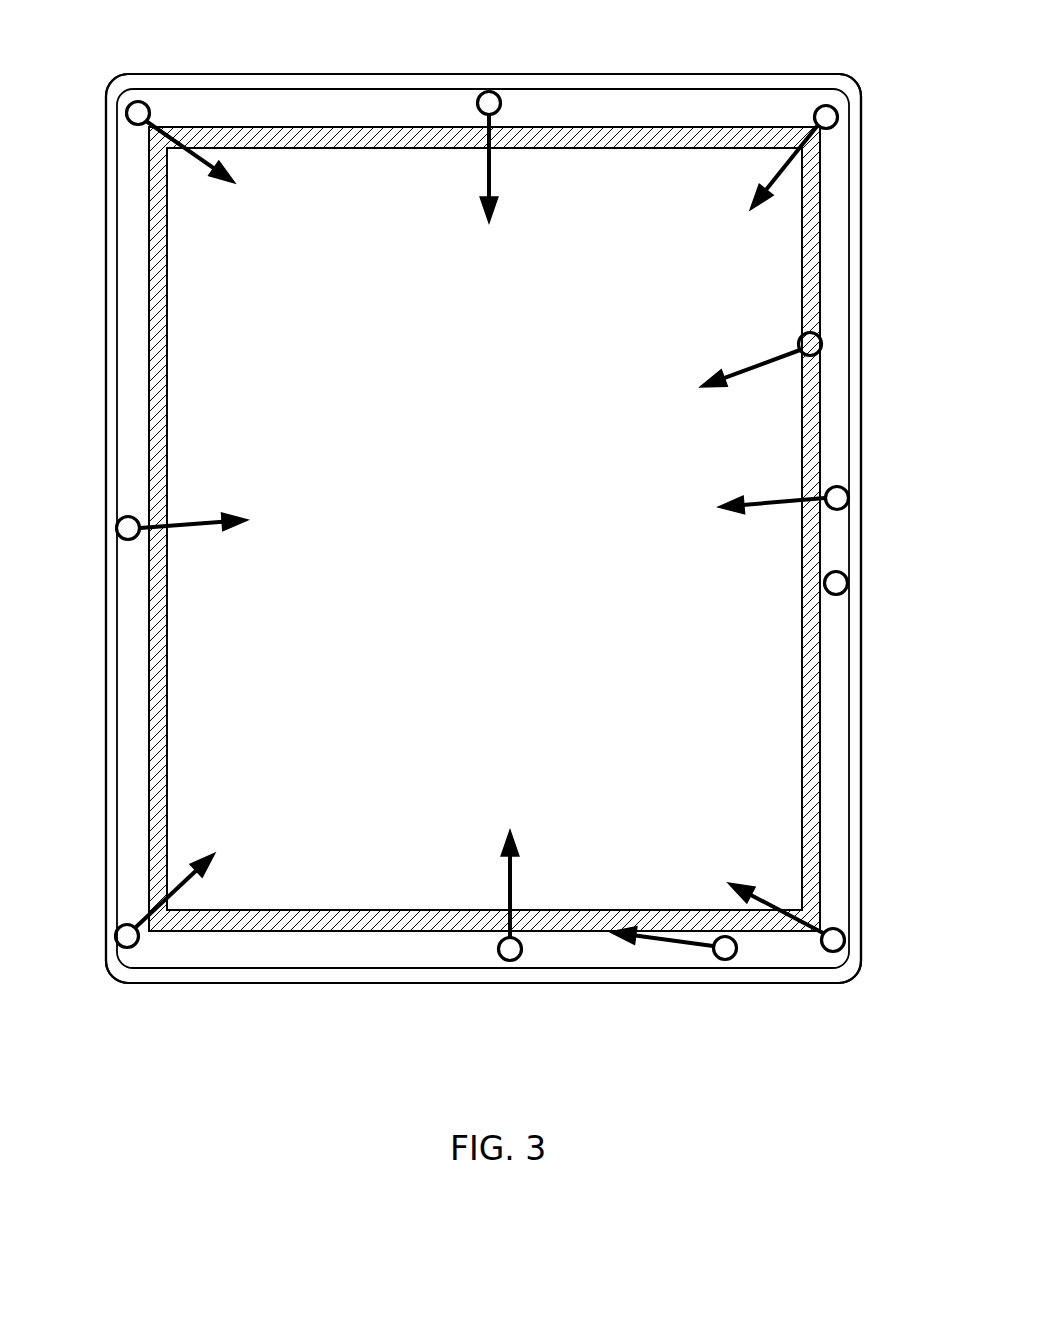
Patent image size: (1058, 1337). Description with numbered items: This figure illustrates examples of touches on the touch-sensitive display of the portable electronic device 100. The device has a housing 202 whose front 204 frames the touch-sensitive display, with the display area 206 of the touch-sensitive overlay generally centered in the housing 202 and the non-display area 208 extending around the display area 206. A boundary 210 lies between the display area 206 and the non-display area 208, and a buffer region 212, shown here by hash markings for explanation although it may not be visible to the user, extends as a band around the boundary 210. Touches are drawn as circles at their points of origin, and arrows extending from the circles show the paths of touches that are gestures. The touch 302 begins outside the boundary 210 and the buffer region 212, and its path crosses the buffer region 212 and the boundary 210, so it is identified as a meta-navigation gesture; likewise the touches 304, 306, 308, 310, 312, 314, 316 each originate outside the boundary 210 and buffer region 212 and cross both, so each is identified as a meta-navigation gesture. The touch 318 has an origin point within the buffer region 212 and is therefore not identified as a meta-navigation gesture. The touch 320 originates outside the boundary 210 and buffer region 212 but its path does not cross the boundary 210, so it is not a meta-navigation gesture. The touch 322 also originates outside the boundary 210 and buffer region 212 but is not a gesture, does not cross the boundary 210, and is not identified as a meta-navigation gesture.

The portable electronic device 100 is at (498, 562).
The housing 202 is at (293, 74).
The front 204 is at (640, 83).
The display area 206 is at (731, 300).
The non-display area 208 is at (827, 767).
The boundary 210 is at (803, 697).
The buffer region 212 is at (808, 432).
The touch 302 is at (510, 961).
The touch 304 is at (118, 520).
The touch 306 is at (848, 490).
The touch 308 is at (497, 92).
The touch 310 is at (146, 102).
The touch 312 is at (835, 108).
The touch 314 is at (130, 949).
The touch 316 is at (845, 930).
The touch 318 is at (818, 335).
The touch 320 is at (725, 960).
The touch 322 is at (848, 575).